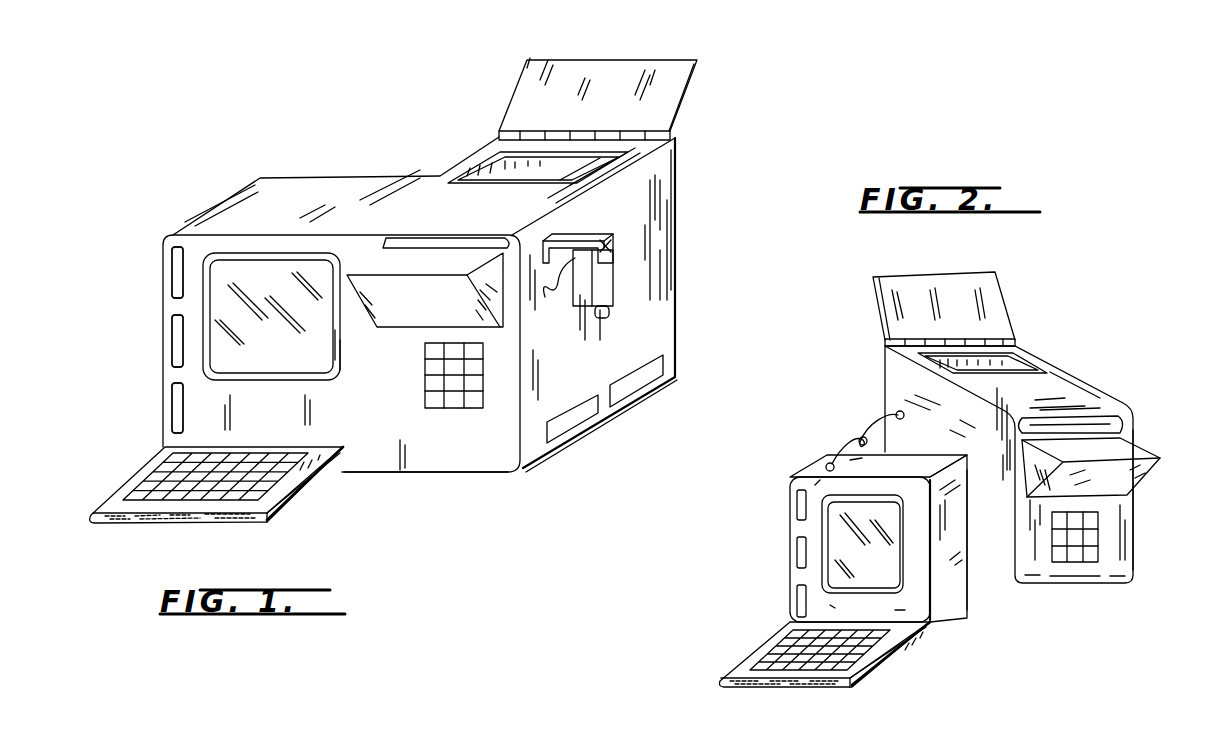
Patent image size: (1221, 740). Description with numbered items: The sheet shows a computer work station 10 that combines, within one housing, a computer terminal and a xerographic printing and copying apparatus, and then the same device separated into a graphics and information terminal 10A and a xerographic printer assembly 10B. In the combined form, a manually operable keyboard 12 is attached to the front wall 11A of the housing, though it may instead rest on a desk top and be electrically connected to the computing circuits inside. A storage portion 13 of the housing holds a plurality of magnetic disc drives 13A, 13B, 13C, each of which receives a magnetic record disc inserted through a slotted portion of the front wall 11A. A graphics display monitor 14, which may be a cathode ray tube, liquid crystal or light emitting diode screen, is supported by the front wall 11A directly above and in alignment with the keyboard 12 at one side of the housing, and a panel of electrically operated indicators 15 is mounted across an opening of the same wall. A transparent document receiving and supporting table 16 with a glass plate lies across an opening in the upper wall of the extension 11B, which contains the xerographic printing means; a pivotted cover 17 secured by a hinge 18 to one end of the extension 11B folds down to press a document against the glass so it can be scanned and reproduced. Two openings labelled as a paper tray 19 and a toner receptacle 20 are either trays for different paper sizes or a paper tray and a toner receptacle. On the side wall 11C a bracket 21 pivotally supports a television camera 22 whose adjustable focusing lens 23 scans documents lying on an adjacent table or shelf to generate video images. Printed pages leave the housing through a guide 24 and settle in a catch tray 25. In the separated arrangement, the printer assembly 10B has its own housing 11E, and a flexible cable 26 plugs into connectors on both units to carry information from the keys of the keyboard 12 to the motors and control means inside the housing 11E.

In FIG. 1, the computer work station 10 is at (250, 155).
In FIG. 2, the graphics and information terminal 10A is at (1067, 647).
In FIG. 2, the xerographic printer assembly 10B is at (1075, 355).
In FIG. 1, the front wall 11A is at (395, 473).
In FIG. 2, the front wall 11A is at (957, 623).
In FIG. 1, the extension 11B is at (667, 207).
In FIG. 2, the extension 11B is at (1073, 380).
In FIG. 1, the side wall 11C is at (667, 187).
In FIG. 2, the housing 11E is at (1140, 552).
In FIG. 1, the keyboard 12 is at (307, 497).
In FIG. 2, the keyboard 12 is at (890, 663).
In FIG. 1, the storage portion 13 is at (160, 267).
In FIG. 1, the magnetic disc drive 13A is at (170, 275).
In FIG. 2, the magnetic disc drive 13A is at (797, 500).
In FIG. 1, the magnetic disc drive 13B is at (170, 340).
In FIG. 2, the magnetic disc drive 13B is at (795, 545).
In FIG. 1, the magnetic disc drive 13C is at (170, 402).
In FIG. 2, the magnetic disc drive 13C is at (797, 598).
In FIG. 1, the graphics display monitor 14 is at (250, 367).
In FIG. 2, the graphics display monitor 14 is at (853, 517).
In FIG. 1, the panel of electrically operated indicators 15 is at (450, 408).
In FIG. 2, the panel of electrically operated indicators 15 is at (1077, 562).
In FIG. 1, the document receiving and supporting table 16 is at (497, 168).
In FIG. 2, the document receiving and supporting table 16 is at (1013, 367).
In FIG. 1, the pivotted cover 17 is at (690, 93).
In FIG. 2, the pivotted cover 17 is at (965, 273).
In FIG. 1, the hinge 18 is at (677, 135).
In FIG. 2, the hinge 18 is at (885, 345).
In FIG. 1, the paper tray 19 is at (563, 422).
In FIG. 1, the toner receptacle 20 is at (633, 385).
In FIG. 1, the bracket 21 is at (613, 233).
In FIG. 1, the television camera 22 is at (613, 275).
In FIG. 1, the adjustable focusing lens 23 is at (610, 312).
In FIG. 1, the guide 24 is at (380, 240).
In FIG. 2, the guide 24 is at (1133, 422).
In FIG. 1, the catch tray 25 is at (398, 330).
In FIG. 2, the catch tray 25 is at (1160, 455).
In FIG. 2, the flexible cable 26 is at (867, 417).